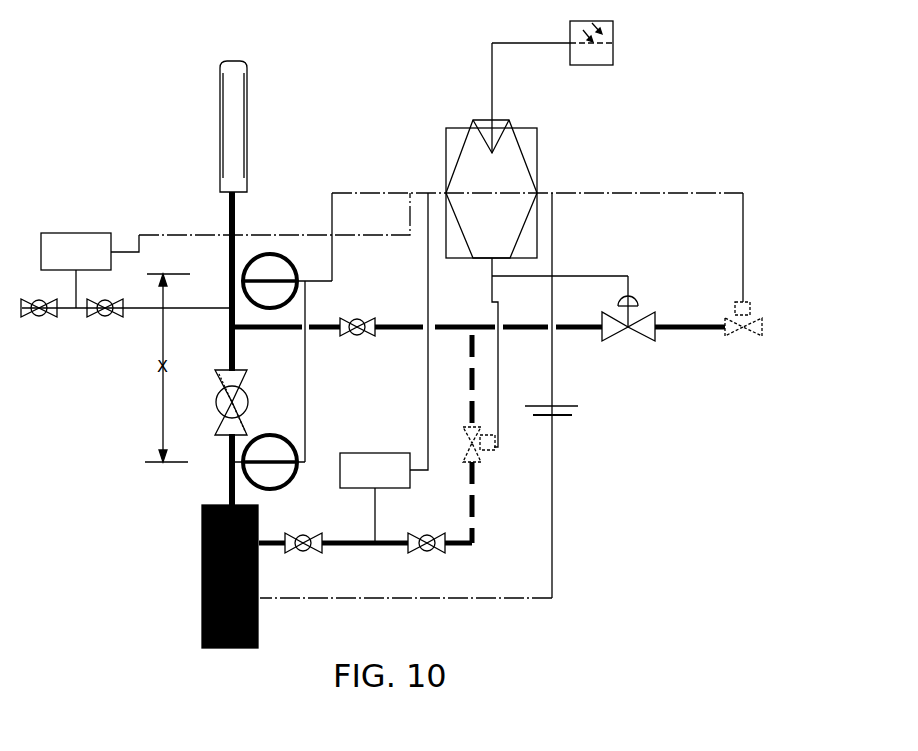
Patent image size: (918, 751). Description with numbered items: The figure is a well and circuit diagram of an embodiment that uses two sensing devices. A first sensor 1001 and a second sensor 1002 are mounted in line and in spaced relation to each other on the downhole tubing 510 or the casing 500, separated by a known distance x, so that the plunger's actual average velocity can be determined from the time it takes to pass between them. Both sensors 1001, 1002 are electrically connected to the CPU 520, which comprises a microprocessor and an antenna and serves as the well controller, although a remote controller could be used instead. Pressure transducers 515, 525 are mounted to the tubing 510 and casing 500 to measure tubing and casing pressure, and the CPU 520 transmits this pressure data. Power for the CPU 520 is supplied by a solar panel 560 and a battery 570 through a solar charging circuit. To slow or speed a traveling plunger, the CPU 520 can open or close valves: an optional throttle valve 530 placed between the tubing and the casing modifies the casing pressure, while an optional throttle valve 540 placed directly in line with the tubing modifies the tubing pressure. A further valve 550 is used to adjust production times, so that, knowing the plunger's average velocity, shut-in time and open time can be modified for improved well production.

The casing 500 is at (259, 588).
The downhole tubing 510 is at (232, 478).
The pressure transducer 515 is at (76, 235).
The CPU 520 is at (517, 202).
The pressure transducer 525 is at (377, 453).
The throttle valve 530 is at (473, 443).
The throttle valve 540 is at (739, 323).
The valve 550 is at (639, 320).
The solar panel 560 is at (595, 57).
The battery 570 is at (558, 406).
The first sensor 1001 is at (233, 463).
The second sensor 1002 is at (253, 292).